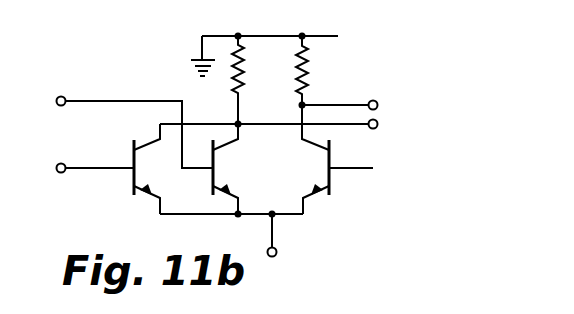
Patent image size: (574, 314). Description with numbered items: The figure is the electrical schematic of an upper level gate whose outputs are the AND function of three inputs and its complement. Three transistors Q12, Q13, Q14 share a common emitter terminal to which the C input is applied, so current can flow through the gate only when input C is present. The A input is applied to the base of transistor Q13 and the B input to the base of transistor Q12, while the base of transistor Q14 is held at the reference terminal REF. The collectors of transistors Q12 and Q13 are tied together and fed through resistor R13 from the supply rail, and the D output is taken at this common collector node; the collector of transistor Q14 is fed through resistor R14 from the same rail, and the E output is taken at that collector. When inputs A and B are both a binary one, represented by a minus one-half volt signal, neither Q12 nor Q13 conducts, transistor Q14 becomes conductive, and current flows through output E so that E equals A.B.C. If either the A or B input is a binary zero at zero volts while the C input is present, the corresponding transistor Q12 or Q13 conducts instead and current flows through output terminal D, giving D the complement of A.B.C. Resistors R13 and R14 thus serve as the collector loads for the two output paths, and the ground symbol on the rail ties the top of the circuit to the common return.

The resistor R13 is at (252, 80).
The resistor R14 is at (317, 70).
The transistor Q12 is at (152, 169).
The transistor Q13 is at (230, 169).
The transistor Q14 is at (310, 159).
The A input A is at (127, 130).
The B input B is at (88, 169).
The C input C is at (280, 238).
The D output D is at (276, 125).
The E output E is at (346, 106).
The reference voltage REF is at (368, 168).